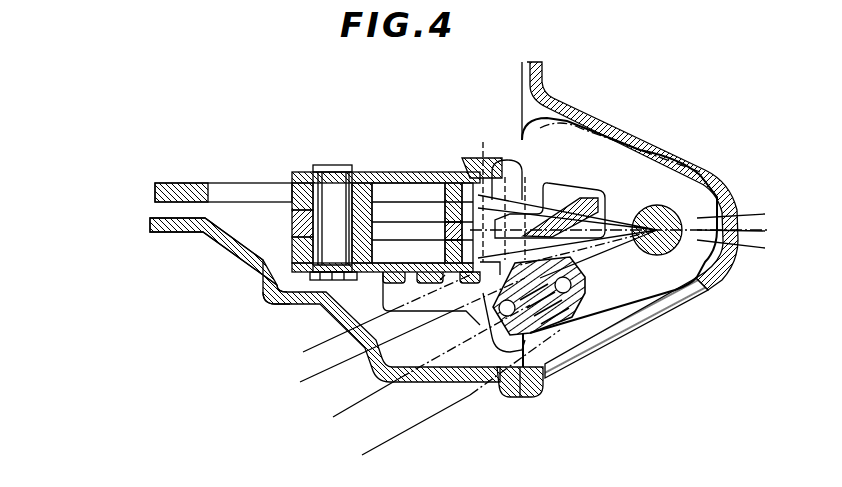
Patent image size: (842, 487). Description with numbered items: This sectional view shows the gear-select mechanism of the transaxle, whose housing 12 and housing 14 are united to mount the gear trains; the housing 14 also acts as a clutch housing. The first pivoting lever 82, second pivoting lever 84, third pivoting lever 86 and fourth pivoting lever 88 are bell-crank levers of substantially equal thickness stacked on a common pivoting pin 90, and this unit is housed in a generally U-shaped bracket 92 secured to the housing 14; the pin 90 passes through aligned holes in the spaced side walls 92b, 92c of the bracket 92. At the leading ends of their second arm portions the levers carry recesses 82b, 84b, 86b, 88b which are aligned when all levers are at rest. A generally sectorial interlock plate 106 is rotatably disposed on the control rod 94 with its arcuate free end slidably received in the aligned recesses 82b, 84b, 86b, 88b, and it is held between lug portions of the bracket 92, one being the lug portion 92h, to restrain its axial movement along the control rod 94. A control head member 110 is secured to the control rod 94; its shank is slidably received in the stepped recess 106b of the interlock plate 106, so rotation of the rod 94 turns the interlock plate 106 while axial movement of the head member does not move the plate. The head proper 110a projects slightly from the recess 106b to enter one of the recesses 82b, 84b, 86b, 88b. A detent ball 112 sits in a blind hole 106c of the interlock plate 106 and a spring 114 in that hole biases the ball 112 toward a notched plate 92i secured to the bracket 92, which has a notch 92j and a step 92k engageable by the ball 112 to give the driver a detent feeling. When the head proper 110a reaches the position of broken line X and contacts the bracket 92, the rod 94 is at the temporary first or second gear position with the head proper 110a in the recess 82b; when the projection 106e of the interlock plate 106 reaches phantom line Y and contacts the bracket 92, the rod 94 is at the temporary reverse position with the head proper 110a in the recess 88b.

The housing 12 is at (207, 235).
The housing 14 is at (541, 92).
The first pivoting lever 82 is at (293, 255).
The second pivoting lever 84 is at (293, 233).
The third pivoting lever 86 is at (293, 213).
The fourth pivoting lever 88 is at (258, 183).
The common pivoting pin 90 is at (330, 185).
The bracket 92 is at (372, 168).
The side wall 92b is at (300, 273).
The side wall 92c is at (300, 172).
The lug portion 92h is at (590, 272).
The notched plate 92i is at (393, 293).
The notch 92j is at (499, 398).
The step 92k is at (487, 345).
The control rod 94 is at (672, 212).
The interlock plate 106 is at (638, 177).
The stepped recess 106b is at (515, 238).
The blind hole 106c is at (592, 338).
The projection 106e is at (478, 163).
The control head member 110 is at (572, 214).
The head proper 110a is at (492, 262).
The detent ball 112 is at (535, 337).
The spring 114 is at (560, 326).
The recess 82b is at (462, 245).
The recess 84b is at (462, 230).
The recess 86b is at (445, 211).
The recess 88b is at (482, 168).
The broken line X is at (438, 280).
The phantom line Y is at (482, 191).